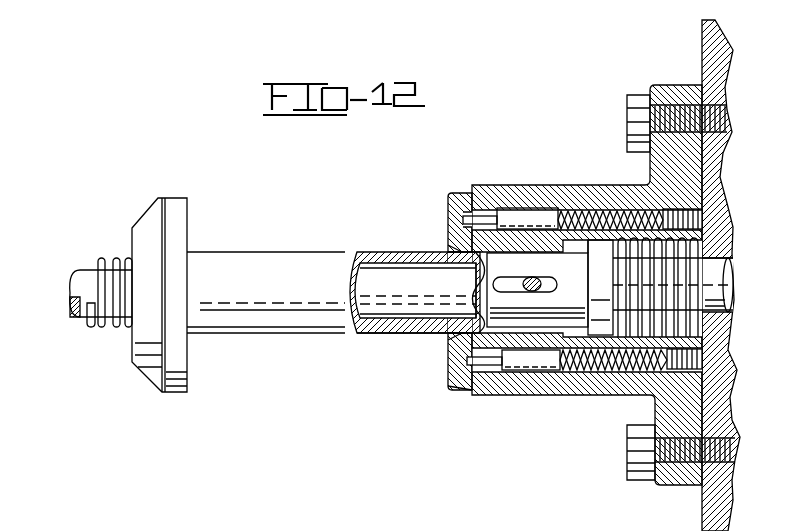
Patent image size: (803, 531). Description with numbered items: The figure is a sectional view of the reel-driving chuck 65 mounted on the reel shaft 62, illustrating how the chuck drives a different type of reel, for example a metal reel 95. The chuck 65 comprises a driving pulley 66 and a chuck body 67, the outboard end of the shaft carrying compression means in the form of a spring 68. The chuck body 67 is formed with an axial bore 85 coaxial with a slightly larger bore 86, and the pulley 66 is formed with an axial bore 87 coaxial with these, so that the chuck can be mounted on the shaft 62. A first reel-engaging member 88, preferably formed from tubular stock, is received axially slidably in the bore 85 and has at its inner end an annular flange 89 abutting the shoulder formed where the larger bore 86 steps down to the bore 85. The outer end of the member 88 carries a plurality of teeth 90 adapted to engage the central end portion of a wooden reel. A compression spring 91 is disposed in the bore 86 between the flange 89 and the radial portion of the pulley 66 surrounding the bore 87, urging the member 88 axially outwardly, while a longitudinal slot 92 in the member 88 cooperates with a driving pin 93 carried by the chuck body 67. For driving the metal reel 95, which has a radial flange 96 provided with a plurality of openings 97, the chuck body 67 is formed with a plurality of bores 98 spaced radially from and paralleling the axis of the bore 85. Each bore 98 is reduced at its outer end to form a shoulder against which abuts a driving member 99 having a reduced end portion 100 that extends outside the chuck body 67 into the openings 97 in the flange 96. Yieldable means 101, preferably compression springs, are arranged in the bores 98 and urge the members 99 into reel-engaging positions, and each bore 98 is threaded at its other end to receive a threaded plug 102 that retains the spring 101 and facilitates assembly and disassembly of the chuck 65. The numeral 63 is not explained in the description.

The shaft 62 is at (83, 278).
The head 63 is at (148, 222).
The reel-driving chuck 65 is at (587, 176).
The driving pulley 66 is at (724, 428).
The chuck body 67 is at (493, 195).
The spring 68 is at (107, 327).
The axial bore 85 is at (462, 257).
The bore 86 is at (575, 245).
The axial bore 87 is at (728, 258).
The first reel-engaging member 88 is at (537, 290).
The annular flange 89 is at (600, 287).
The teeth 90 is at (470, 275).
The compression spring 91 is at (733, 284).
The slot 92 is at (527, 281).
The driving pin 93 is at (538, 280).
The metal reel 95 is at (395, 325).
The radial flange 96 is at (455, 350).
The openings 97 is at (452, 247).
The bores 98 is at (538, 229).
The driving member 99 is at (520, 218).
The reduced end portion 100 is at (456, 385).
The yieldable means 101 is at (600, 227).
The threaded plug 102 is at (700, 212).